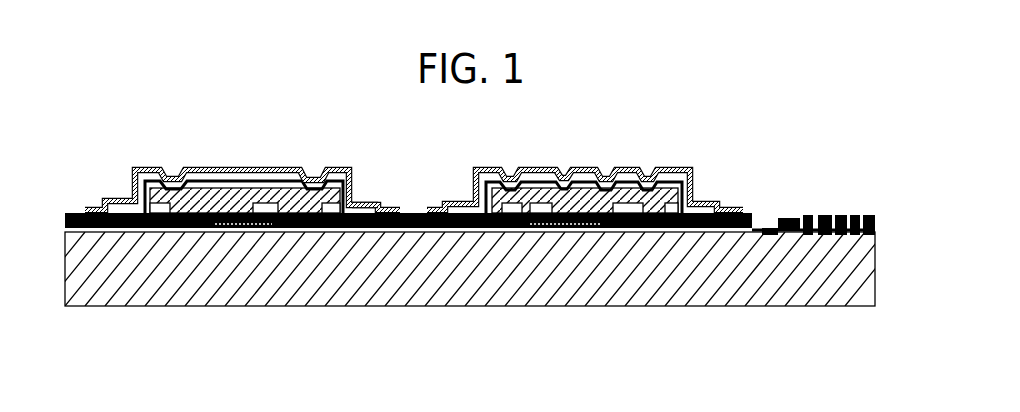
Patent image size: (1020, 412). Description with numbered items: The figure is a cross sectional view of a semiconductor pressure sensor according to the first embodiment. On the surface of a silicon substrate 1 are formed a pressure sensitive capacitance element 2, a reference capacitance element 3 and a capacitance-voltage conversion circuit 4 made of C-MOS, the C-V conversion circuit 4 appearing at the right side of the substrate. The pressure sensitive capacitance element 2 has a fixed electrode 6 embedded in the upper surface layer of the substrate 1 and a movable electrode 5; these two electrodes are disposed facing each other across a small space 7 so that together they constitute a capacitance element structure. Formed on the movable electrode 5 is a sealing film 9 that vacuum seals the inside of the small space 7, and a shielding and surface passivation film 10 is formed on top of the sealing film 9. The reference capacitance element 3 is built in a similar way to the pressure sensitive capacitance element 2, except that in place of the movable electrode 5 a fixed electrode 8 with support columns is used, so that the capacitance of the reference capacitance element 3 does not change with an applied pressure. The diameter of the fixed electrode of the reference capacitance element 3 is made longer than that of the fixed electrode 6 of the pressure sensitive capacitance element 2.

The silicon substrate 1 is at (581, 280).
The pressure sensitive capacitance element 2 is at (251, 158).
The reference capacitance element 3 is at (585, 166).
The capacitance-voltage conversion circuit 4 is at (832, 217).
The movable electrode 5 is at (187, 172).
The fixed electrode 6 is at (330, 200).
The small space 7 is at (243, 210).
The fixed electrode with support columns 8 is at (582, 200).
The sealing film 9 is at (278, 175).
The shielding and surface passivation film 10 is at (372, 201).